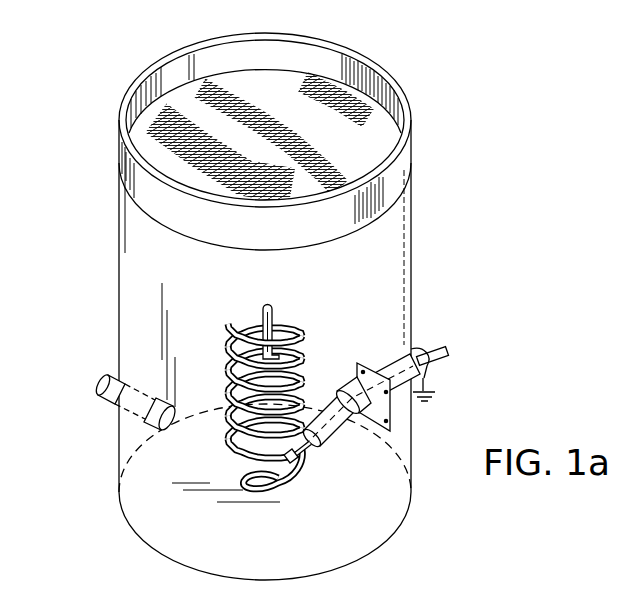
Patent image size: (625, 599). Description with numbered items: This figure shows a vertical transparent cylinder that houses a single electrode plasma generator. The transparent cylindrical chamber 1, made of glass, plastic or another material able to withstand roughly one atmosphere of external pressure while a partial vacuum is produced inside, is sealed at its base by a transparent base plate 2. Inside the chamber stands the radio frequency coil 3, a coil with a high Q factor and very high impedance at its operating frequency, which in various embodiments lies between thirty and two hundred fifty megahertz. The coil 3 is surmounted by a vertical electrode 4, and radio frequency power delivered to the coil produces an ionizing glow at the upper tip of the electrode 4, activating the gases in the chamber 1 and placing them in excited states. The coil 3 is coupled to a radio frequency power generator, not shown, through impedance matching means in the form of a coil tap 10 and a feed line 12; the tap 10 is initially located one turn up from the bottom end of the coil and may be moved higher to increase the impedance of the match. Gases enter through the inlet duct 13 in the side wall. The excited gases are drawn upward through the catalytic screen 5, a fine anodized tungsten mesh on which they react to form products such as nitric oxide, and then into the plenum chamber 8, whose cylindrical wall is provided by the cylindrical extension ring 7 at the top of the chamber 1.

The transparent cylindrical chamber 1 is at (411, 297).
The transparent base plate 2 is at (314, 534).
The radio frequency coil 3 is at (255, 392).
The electrode 4 is at (273, 317).
The catalytic screen 5 is at (280, 104).
The cylindrical extension ring 7 is at (153, 66).
The plenum chamber 8 is at (378, 76).
The coil tap 10 is at (300, 456).
The feed line 12 is at (412, 352).
The inlet duct 13 is at (117, 374).